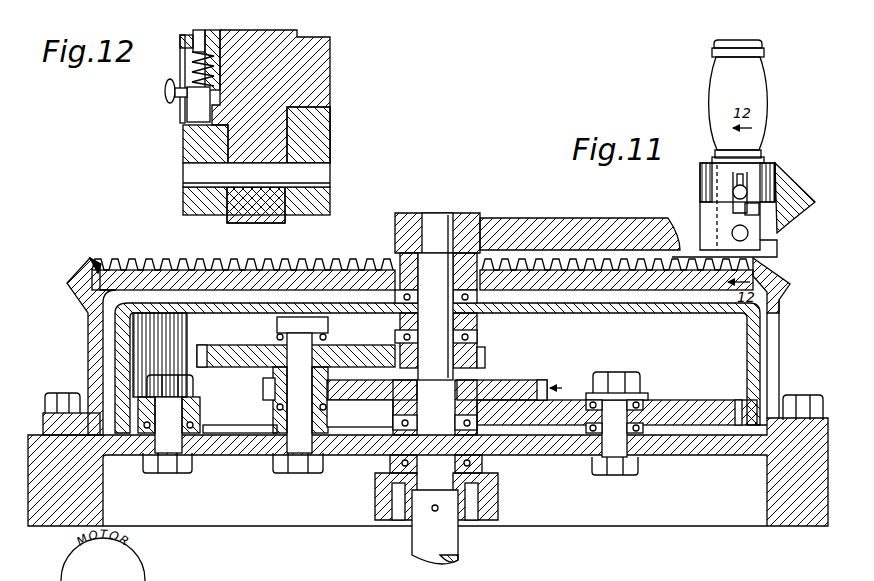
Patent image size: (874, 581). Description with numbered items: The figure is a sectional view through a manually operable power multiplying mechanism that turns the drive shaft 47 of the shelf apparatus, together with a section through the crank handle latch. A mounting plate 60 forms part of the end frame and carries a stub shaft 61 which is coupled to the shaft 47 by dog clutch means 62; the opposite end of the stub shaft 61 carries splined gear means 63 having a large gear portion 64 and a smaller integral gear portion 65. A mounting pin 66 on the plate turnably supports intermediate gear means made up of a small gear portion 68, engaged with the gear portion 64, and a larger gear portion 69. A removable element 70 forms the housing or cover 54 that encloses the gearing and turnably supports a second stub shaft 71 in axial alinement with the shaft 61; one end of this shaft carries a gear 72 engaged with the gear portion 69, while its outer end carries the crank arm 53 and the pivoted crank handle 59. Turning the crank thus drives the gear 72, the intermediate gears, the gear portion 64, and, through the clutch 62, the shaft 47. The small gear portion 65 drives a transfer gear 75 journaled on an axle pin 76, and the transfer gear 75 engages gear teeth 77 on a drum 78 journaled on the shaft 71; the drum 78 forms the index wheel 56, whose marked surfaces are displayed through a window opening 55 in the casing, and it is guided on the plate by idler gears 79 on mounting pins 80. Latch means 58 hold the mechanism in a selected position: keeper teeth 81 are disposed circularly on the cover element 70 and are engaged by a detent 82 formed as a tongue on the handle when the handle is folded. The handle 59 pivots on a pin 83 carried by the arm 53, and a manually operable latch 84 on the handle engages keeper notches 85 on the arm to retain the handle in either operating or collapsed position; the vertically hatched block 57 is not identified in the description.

In FIG. 11, the drive shaft 47 is at (412, 541).
In FIG. 12, the crank arm 53 is at (331, 128).
In FIG. 11, the crank arm 53 is at (590, 222).
In FIG. 11, the housing 54 is at (91, 328).
In FIG. 11, the window opening 55 is at (781, 353).
In FIG. 11, the index wheel 56 is at (781, 336).
In FIG. 11, the worm gear block 57 is at (196, 353).
In FIG. 11, the latch means 58 is at (797, 290).
In FIG. 11, the crank handle 59 is at (766, 100).
In FIG. 11, the mounting plate 60 is at (238, 455).
In FIG. 11, the stub shaft 61 is at (483, 469).
In FIG. 11, the dog clutch means 62 is at (374, 494).
In FIG. 11, the gear means 63 is at (558, 383).
In FIG. 11, the large gear portion 64 is at (531, 380).
In FIG. 11, the small gear portion 65 is at (388, 413).
In FIG. 11, the mounting pin 66 is at (276, 420).
In FIG. 11, the small gear portion 68 is at (263, 388).
In FIG. 11, the large gear portion 69 is at (248, 349).
In FIG. 11, the removable element 70 is at (262, 268).
In FIG. 11, the stub shaft 71 is at (435, 296).
In FIG. 11, the gear 72 is at (486, 359).
In FIG. 11, the transfer gear 75 is at (667, 407).
In FIG. 11, the axle pin 76 is at (613, 393).
In FIG. 11, the gear teeth 77 is at (737, 402).
In FIG. 11, the drum 78 is at (705, 313).
In FIG. 11, the idler gears 79 is at (196, 436).
In FIG. 11, the mounting pins 80 is at (172, 450).
In FIG. 11, the teeth 81 is at (93, 262).
In FIG. 12, the detent 82 is at (232, 146).
In FIG. 11, the detent 82 is at (797, 216).
In FIG. 12, the pin 83 is at (331, 173).
In FIG. 11, the pin 83 is at (732, 230).
In FIG. 12, the latch 84 is at (164, 93).
In FIG. 11, the latch 84 is at (749, 190).
In FIG. 12, the keeper notches 85 is at (186, 116).
In FIG. 11, the keeper notches 85 is at (753, 204).